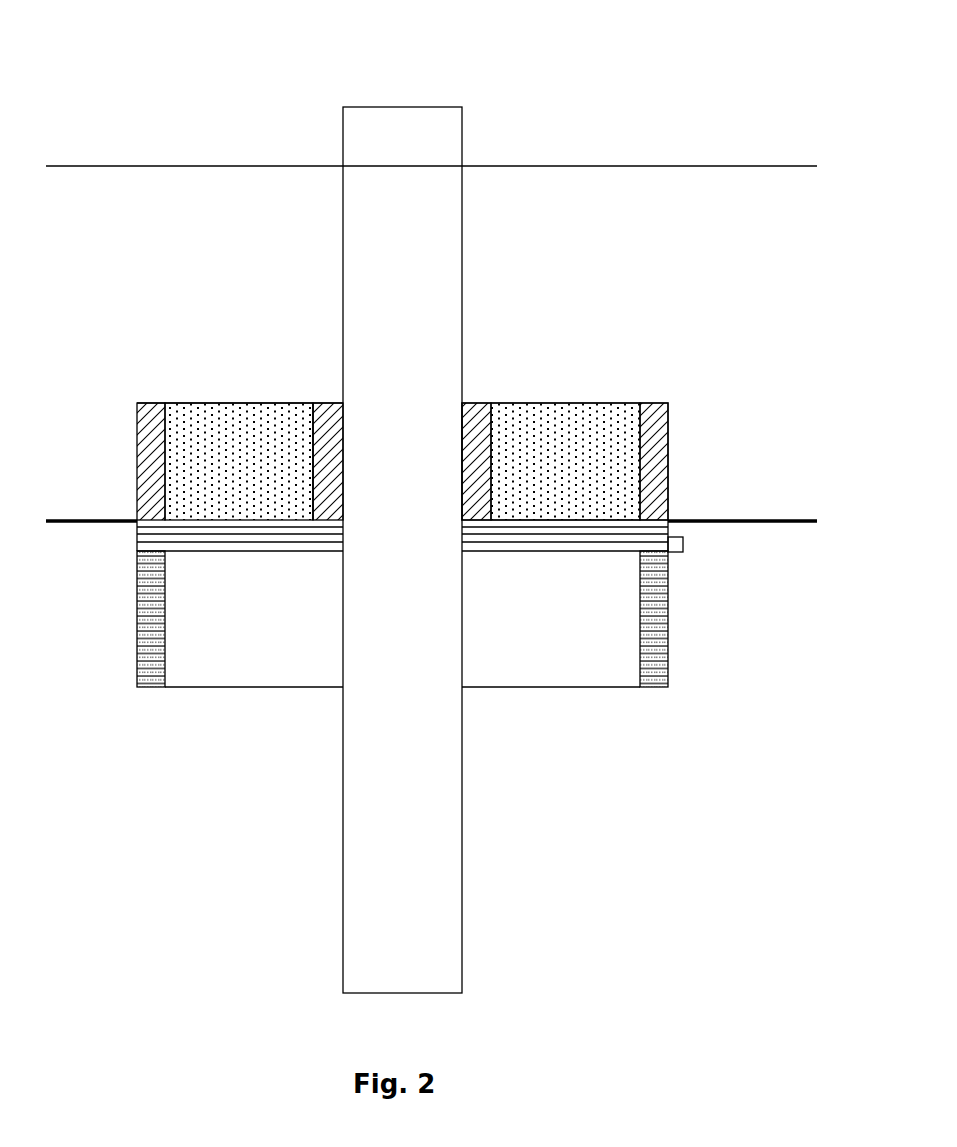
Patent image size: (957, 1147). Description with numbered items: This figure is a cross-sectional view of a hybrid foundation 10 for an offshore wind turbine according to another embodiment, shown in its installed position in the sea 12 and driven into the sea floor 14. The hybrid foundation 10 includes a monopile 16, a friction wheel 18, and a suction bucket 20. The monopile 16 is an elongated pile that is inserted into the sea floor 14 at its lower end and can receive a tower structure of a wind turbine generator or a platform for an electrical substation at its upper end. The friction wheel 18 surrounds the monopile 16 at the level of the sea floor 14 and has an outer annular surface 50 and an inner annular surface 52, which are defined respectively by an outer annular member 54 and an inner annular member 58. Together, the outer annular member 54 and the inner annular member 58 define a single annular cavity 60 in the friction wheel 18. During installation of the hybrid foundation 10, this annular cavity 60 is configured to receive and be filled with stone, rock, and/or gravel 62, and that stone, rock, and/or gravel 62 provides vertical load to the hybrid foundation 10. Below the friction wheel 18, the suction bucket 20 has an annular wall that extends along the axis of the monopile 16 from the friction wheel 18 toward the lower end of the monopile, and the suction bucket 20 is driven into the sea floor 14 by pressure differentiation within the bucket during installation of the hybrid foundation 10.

The hybrid foundation 10 is at (503, 86).
The sea 12 is at (706, 264).
The sea floor 14 is at (768, 517).
The monopile 16 is at (466, 251).
The friction wheel 18 is at (673, 427).
The suction bucket 20 is at (676, 635).
The outer annular surface 50 is at (137, 460).
The inner annular surface 52 is at (312, 443).
The outer annular member 54 is at (137, 403).
The inner annular member 58 is at (323, 430).
The annular cavity 60 is at (253, 401).
The stone, rock, and/or gravel 62 is at (526, 424).